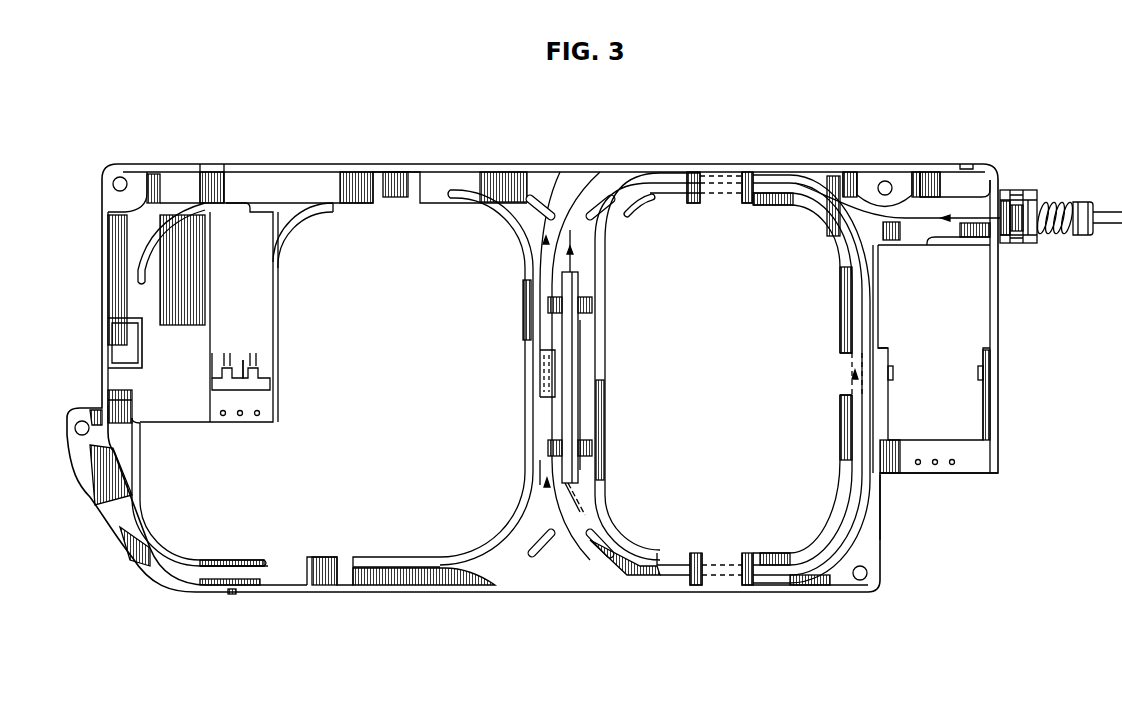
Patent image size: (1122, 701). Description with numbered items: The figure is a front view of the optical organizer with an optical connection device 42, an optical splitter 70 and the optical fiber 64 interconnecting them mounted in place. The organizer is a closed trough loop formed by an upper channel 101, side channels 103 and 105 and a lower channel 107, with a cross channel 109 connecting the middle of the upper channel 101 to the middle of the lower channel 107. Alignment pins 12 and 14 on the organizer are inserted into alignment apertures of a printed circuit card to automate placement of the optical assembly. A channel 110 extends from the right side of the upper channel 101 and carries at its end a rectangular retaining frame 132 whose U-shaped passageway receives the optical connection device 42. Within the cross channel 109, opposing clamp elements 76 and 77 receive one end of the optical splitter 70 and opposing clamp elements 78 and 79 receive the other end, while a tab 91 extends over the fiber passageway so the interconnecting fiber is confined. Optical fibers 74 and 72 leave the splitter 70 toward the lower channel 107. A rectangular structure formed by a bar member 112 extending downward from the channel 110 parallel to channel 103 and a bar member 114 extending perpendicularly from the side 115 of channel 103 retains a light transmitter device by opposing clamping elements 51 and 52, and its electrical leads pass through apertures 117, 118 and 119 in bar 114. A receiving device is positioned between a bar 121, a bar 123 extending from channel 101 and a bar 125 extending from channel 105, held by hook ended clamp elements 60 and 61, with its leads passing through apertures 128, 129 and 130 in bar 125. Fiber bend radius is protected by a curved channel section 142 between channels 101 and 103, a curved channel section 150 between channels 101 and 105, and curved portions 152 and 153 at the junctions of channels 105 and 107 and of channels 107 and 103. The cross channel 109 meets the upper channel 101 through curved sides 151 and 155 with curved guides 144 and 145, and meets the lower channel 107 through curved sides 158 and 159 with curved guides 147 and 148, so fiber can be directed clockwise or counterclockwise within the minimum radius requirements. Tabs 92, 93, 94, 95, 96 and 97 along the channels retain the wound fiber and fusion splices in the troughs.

The alignment pin 12 is at (232, 596).
The alignment pin 14 is at (972, 164).
The optical connection device 42 is at (1050, 213).
The clamping element 51 is at (895, 373).
The clamping element 52 is at (977, 380).
The hook ended clamp element 60 is at (250, 360).
The hook ended clamp element 61 is at (230, 350).
The optical fiber 64 is at (593, 258).
The optical splitter 70 is at (570, 345).
The optical fiber 72 is at (585, 500).
The unjacketed optical fiber 74 is at (592, 455).
The clamp element 76 is at (540, 300).
The clamp element 77 is at (595, 305).
The clamp element 78 is at (540, 445).
The clamp element 79 is at (600, 435).
The tab 91 is at (540, 372).
The tab 92 is at (393, 202).
The tab 93 is at (120, 342).
The tab 94 is at (330, 557).
The tab 95 is at (722, 552).
The tab 96 is at (720, 203).
The tab 97 is at (848, 378).
The upper channel 101 is at (357, 185).
The side channel 103 is at (848, 325).
The side channel 105 is at (110, 480).
The lower channel 107 is at (766, 556).
The cross channel 109 is at (580, 322).
The channel 110 is at (940, 180).
The bar member 112 is at (1000, 330).
The bar member 114 is at (995, 470).
The side of channel 115 is at (880, 316).
The aperture 117 is at (918, 466).
The aperture 118 is at (935, 466).
The aperture 119 is at (953, 466).
The bar 121 is at (276, 288).
The bar 123 is at (270, 250).
The bar 125 is at (185, 425).
The aperture 128 is at (222, 418).
The aperture 129 is at (240, 418).
The aperture 130 is at (258, 420).
The retaining frame 132 is at (1020, 190).
The curved channel section 142 is at (822, 222).
The curved guide 144 is at (598, 205).
The curved guide 145 is at (545, 195).
The curved guide 147 is at (540, 560).
The curved guide 148 is at (593, 560).
The curved channel section 150 is at (182, 200).
The curved side 151 is at (645, 210).
The curved portion 152 is at (172, 583).
The curved portion 153 is at (820, 565).
The curved side 155 is at (492, 212).
The curved side 158 is at (492, 540).
The curved side 159 is at (632, 530).